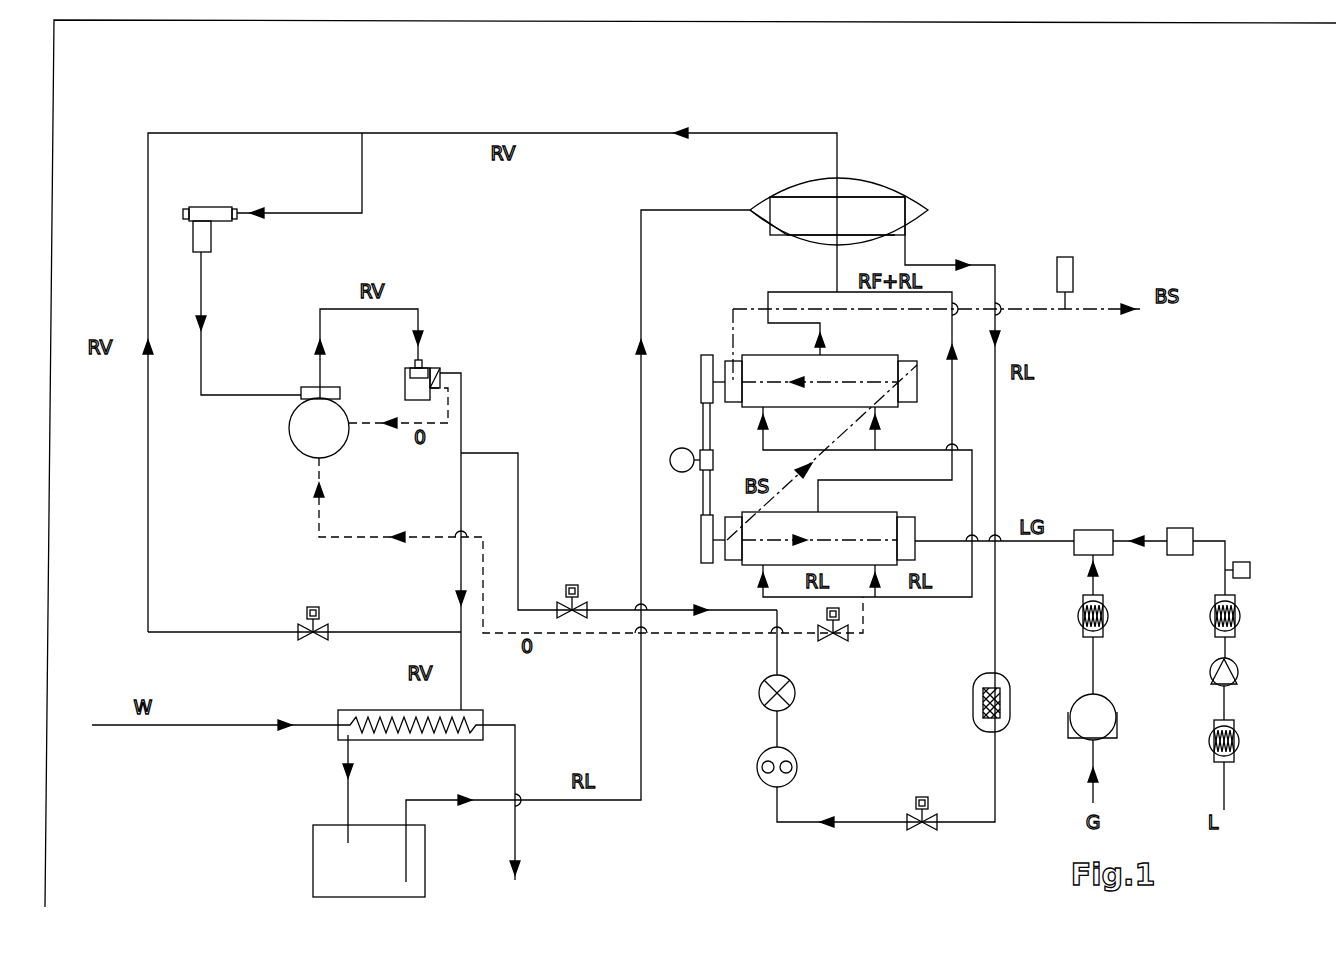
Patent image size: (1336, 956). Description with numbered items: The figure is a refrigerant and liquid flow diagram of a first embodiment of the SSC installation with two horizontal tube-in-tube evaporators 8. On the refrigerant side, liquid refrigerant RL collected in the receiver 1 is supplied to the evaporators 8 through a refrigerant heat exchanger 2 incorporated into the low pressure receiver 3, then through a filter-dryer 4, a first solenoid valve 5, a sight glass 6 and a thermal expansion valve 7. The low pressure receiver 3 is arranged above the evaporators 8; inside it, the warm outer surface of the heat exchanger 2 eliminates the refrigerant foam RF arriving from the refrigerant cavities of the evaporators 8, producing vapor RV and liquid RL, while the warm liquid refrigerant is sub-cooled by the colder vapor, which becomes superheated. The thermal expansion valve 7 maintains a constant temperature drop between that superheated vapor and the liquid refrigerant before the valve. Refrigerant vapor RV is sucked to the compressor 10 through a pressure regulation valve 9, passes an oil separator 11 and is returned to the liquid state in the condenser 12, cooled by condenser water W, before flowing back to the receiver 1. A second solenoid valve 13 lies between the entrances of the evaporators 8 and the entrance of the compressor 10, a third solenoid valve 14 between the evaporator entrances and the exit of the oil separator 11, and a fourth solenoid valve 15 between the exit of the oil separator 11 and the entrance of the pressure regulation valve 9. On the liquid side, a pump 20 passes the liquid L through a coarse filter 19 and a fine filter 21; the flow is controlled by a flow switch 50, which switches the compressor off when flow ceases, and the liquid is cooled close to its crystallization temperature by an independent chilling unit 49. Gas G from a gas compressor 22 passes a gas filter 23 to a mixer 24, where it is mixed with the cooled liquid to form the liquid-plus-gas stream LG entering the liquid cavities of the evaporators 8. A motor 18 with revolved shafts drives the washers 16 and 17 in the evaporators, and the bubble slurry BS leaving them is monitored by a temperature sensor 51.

The receiver 1 is at (332, 850).
The refrigerant heat exchanger 2 is at (837, 216).
The low pressure receiver 3 is at (839, 194).
The filter-dryer 4 is at (1003, 692).
The solenoid valve 5 is at (912, 830).
The sight glass 6 is at (757, 765).
The thermal expansion valve 7 is at (763, 692).
The evaporators 8 is at (821, 460).
The pressure regulation valve 9 is at (212, 222).
The compressor 10 is at (306, 446).
The oil separator 11 is at (440, 370).
The condenser 12 is at (360, 720).
The second solenoid valve 13 is at (836, 643).
The third solenoid valve 14 is at (585, 612).
The fourth solenoid valve 15 is at (300, 630).
The washer 16 is at (708, 372).
The washer 17 is at (703, 540).
The motor 18 is at (677, 475).
The coarse filter 19 is at (1243, 742).
The pump 20 is at (1243, 668).
The fine filter 21 is at (1242, 612).
The gas compressor 22 is at (1113, 708).
The gas filter 23 is at (1112, 610).
The mixer 24 is at (1108, 530).
The independent chilling unit 49 is at (1193, 530).
The flow switch 50 is at (1250, 565).
The temperature sensor 51 is at (1073, 275).